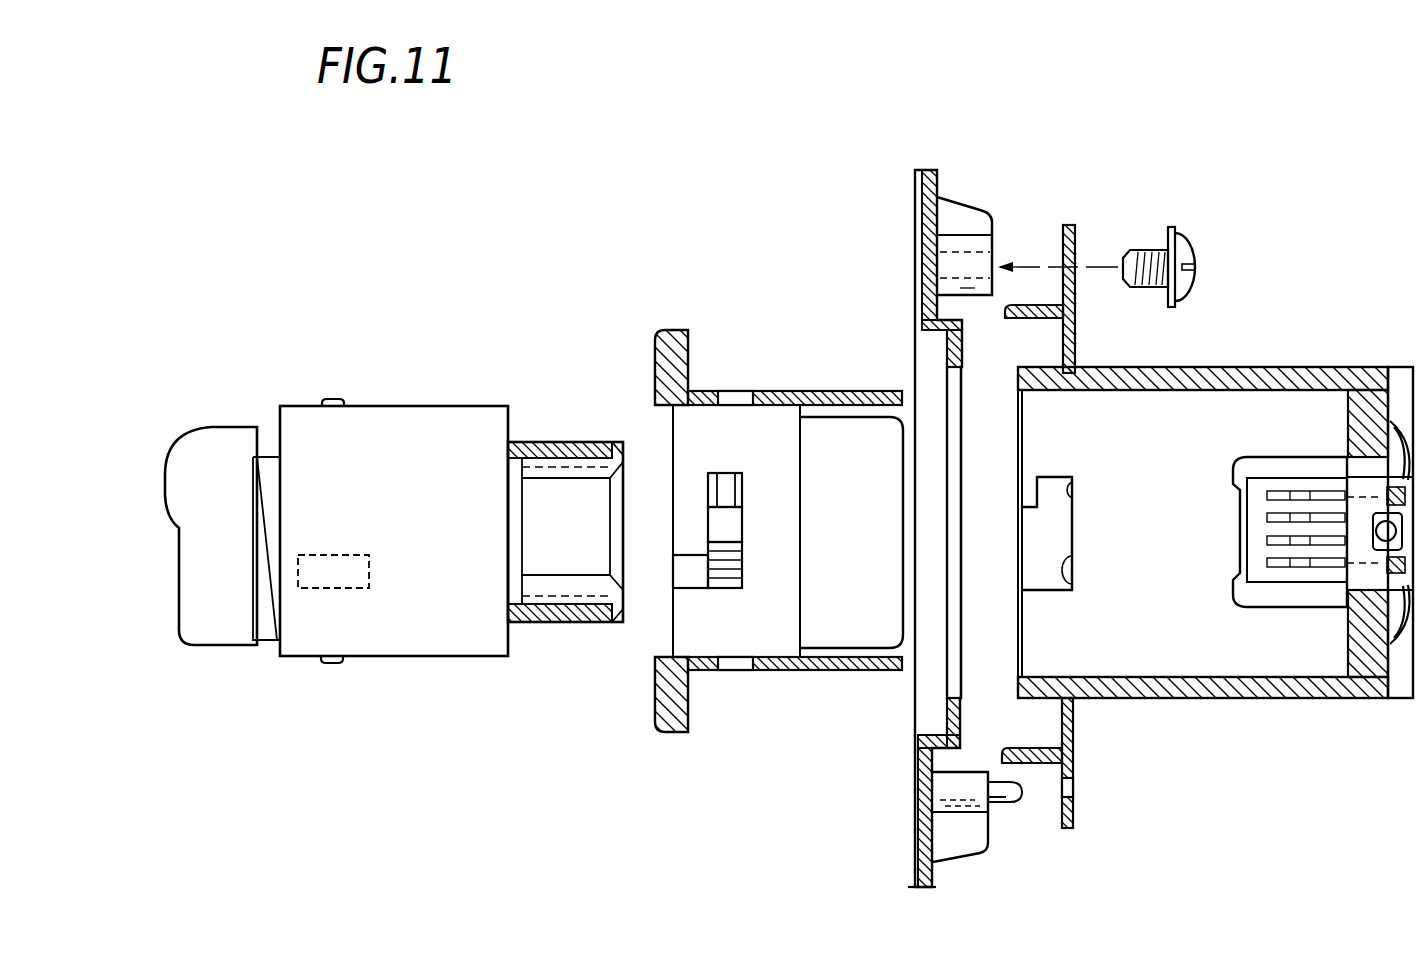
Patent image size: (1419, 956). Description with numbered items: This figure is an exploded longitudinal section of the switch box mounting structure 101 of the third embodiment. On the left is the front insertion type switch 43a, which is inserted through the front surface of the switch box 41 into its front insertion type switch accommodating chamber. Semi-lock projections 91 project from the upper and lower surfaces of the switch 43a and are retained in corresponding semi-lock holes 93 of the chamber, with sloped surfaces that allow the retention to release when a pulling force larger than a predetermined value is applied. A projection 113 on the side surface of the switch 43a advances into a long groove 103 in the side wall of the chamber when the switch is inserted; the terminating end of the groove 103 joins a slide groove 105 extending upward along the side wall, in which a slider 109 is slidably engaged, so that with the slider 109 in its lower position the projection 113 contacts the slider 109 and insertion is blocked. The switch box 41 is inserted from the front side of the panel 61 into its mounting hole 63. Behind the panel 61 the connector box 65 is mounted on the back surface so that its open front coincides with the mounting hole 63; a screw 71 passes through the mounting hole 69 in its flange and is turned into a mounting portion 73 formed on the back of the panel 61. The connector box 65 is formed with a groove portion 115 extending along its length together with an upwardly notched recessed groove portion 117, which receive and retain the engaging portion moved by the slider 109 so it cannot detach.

The switch box 41 is at (707, 314).
The front insertion type switch 43a is at (471, 666).
The panel 61 is at (898, 192).
The mounting hole 63 is at (930, 712).
The connector box 65 is at (1385, 342).
The mounting hole 69 is at (1073, 794).
The screw 71 is at (1194, 258).
The mounting portion 73 is at (968, 218).
The semi-lock projection 91 is at (334, 398).
The semi-lock hole 93 is at (728, 391).
The switch box mounting structure 101 is at (1106, 204).
The groove 103 is at (685, 574).
The slide groove 105 is at (729, 472).
The slider 109 is at (742, 565).
The projection 113 is at (358, 589).
The groove portion 115 is at (1073, 584).
The recessed groove portion 117 is at (1074, 497).